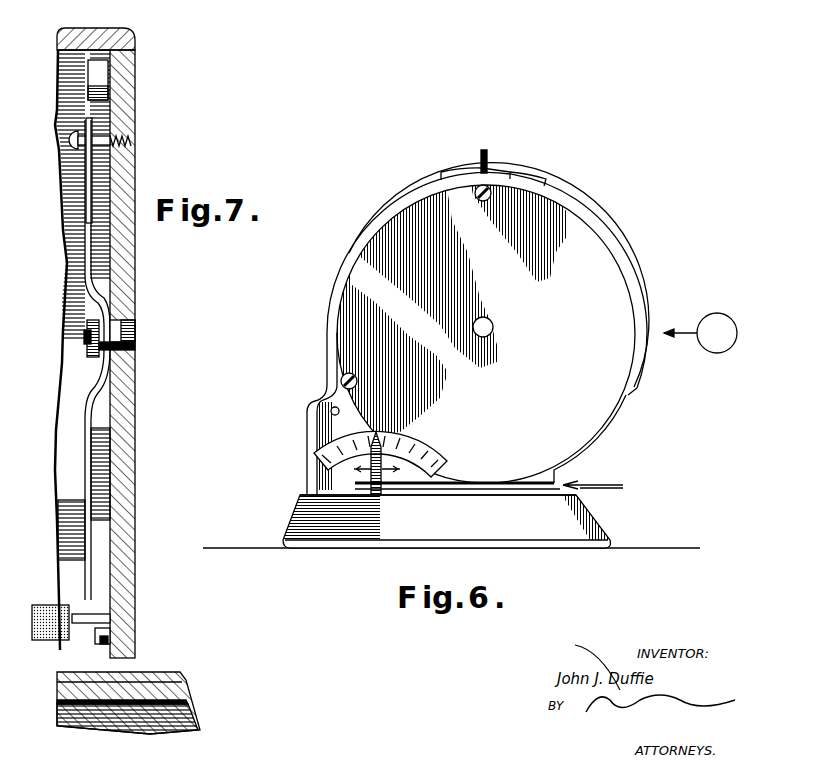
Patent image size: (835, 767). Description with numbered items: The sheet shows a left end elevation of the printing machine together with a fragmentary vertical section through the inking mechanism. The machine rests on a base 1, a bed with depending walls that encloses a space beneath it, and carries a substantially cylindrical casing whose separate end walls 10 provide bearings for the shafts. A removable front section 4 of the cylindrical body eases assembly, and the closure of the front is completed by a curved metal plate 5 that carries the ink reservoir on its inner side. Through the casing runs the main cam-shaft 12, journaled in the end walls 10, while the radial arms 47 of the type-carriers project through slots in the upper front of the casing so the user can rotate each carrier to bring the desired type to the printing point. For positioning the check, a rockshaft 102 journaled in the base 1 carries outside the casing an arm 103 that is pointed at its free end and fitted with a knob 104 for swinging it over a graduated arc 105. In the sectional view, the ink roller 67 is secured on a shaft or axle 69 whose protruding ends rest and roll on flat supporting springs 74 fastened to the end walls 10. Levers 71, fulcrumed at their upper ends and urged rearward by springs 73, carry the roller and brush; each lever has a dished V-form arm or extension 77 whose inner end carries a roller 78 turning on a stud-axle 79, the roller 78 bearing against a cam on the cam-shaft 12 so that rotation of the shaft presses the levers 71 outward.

In FIG. 6, the base 1 is at (524, 526).
In FIG. 6, the front section 4 is at (617, 258).
In FIG. 6, the curved metal plate 5 is at (700, 333).
In FIG. 6, the end walls 10 is at (518, 420).
In FIG. 6, the main cam-shaft 12 is at (489, 333).
In FIG. 6, the radial arms 47 is at (495, 158).
In FIG. 6, the rockshaft 102 is at (383, 536).
In FIG. 6, the arm 103 is at (375, 500).
In FIG. 6, the knob 104 is at (383, 436).
In FIG. 6, the graduated arc 105 is at (436, 452).
In FIG. 7, the ink roller 67 is at (38, 642).
In FIG. 7, the shaft or axle 69 is at (100, 618).
In FIG. 7, the levers 71 is at (92, 426).
In FIG. 7, the springs 73 is at (108, 181).
In FIG. 7, the flat supporting springs 74 is at (102, 645).
In FIG. 7, the arm or extension 77 is at (112, 300).
In FIG. 7, the roller 78 is at (90, 343).
In FIG. 7, the stud-axle 79 is at (92, 328).